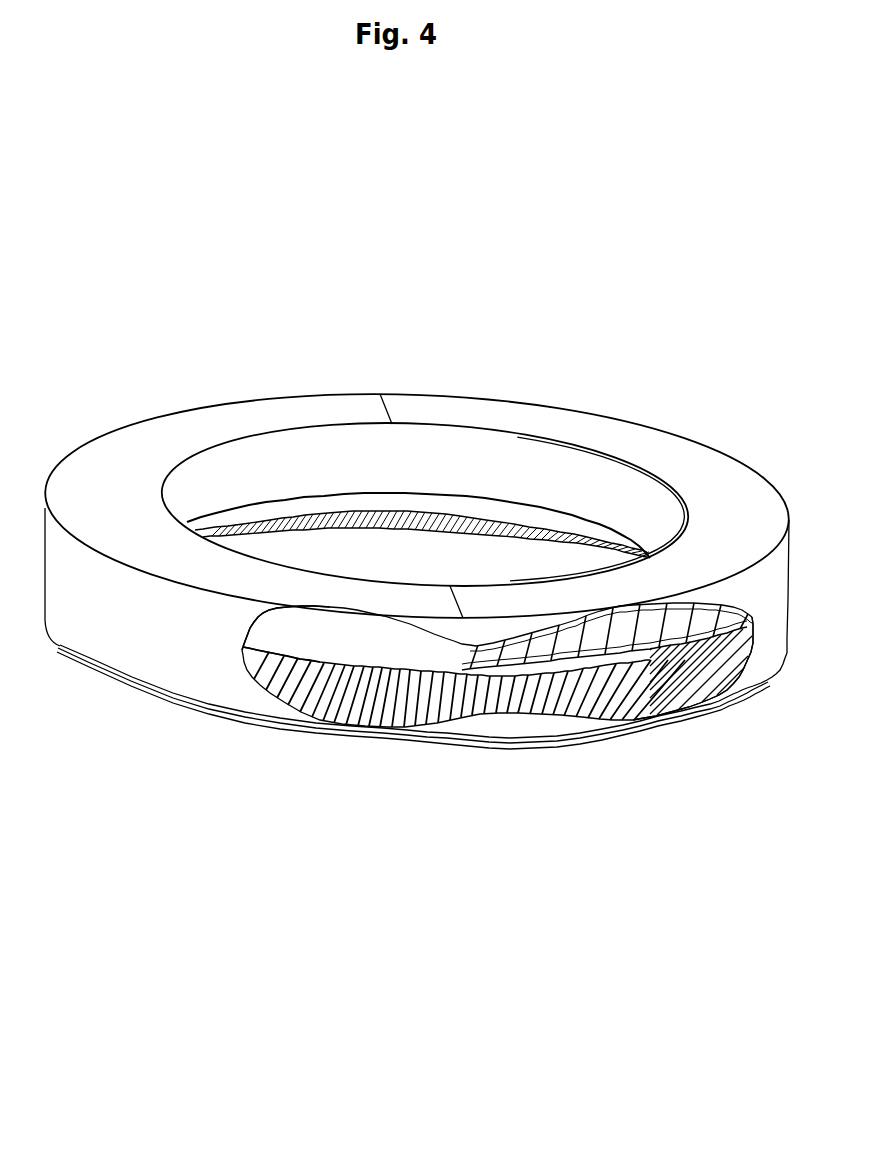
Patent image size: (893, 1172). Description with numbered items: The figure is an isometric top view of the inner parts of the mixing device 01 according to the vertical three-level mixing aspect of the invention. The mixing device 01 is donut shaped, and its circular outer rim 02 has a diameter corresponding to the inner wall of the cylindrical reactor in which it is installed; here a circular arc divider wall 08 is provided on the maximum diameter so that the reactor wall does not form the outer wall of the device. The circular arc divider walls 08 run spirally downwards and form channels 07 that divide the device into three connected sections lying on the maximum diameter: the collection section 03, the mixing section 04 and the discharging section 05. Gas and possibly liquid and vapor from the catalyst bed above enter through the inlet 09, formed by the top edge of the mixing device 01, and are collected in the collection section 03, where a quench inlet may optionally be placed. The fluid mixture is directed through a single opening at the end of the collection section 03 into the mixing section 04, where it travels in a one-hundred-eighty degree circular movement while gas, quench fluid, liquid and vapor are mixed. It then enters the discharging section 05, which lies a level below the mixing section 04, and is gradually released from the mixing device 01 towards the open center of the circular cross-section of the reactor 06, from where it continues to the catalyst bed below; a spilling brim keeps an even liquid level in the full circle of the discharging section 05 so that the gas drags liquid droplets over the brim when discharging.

The mixing device 01 is at (216, 292).
The outer rim 02 is at (292, 723).
The collection section 03 is at (741, 551).
The mixing section 04 is at (290, 637).
The discharging section 05 is at (570, 663).
The center of the circular cross-section of the reactor 06 is at (422, 538).
The channels 07 is at (419, 836).
The circular arc divider wall 08 is at (278, 477).
The inlet 09 is at (400, 415).